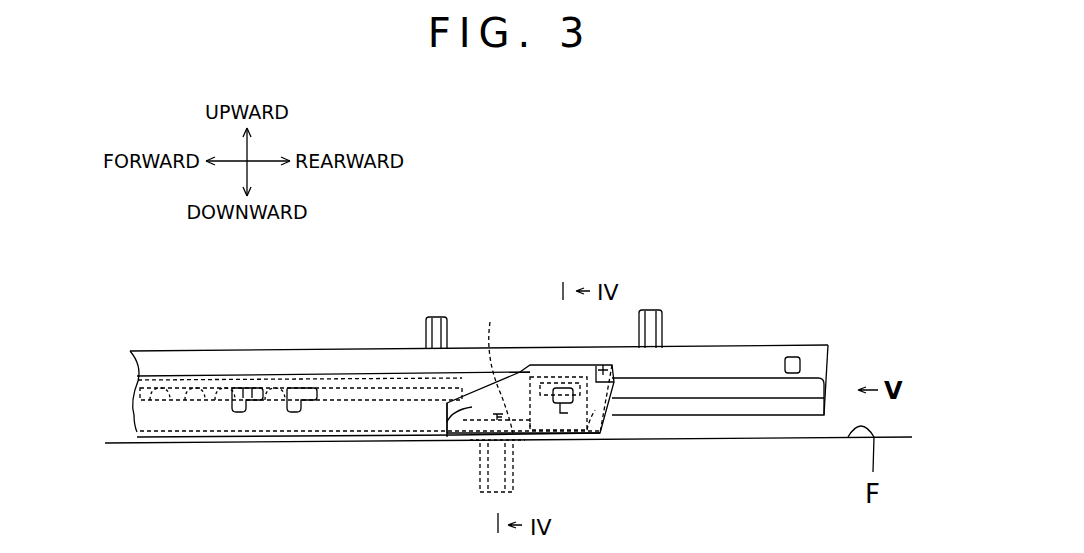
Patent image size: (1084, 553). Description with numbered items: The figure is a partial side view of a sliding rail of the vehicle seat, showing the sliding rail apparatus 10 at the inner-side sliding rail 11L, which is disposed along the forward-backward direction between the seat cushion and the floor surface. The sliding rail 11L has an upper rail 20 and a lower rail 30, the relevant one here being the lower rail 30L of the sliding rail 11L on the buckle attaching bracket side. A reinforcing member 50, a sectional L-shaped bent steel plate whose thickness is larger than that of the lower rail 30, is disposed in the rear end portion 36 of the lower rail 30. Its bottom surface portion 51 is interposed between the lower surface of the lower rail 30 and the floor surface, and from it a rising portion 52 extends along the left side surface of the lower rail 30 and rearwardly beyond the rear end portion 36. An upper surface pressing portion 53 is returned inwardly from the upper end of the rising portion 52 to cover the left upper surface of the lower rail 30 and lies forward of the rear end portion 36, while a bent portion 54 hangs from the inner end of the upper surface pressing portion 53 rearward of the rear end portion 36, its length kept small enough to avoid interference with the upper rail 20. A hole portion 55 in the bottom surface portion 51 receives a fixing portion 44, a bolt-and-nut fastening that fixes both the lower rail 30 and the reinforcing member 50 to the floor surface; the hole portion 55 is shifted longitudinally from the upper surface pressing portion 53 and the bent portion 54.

The sliding rail apparatus 10 is at (479, 358).
The sliding rail 11L is at (319, 342).
The upper rail 20 is at (739, 353).
The lower rail 30 is at (368, 448).
The lower rail 30L is at (180, 418).
The rear end portion 36 is at (590, 440).
The fixing portion 44 is at (491, 364).
The reinforcing member 50 is at (608, 357).
The bottom surface portion 51 is at (548, 436).
The rising portion 52 is at (447, 410).
The upper surface pressing portion 53 is at (553, 367).
The bent portion 54 is at (605, 408).
The hole portion 55 is at (478, 445).